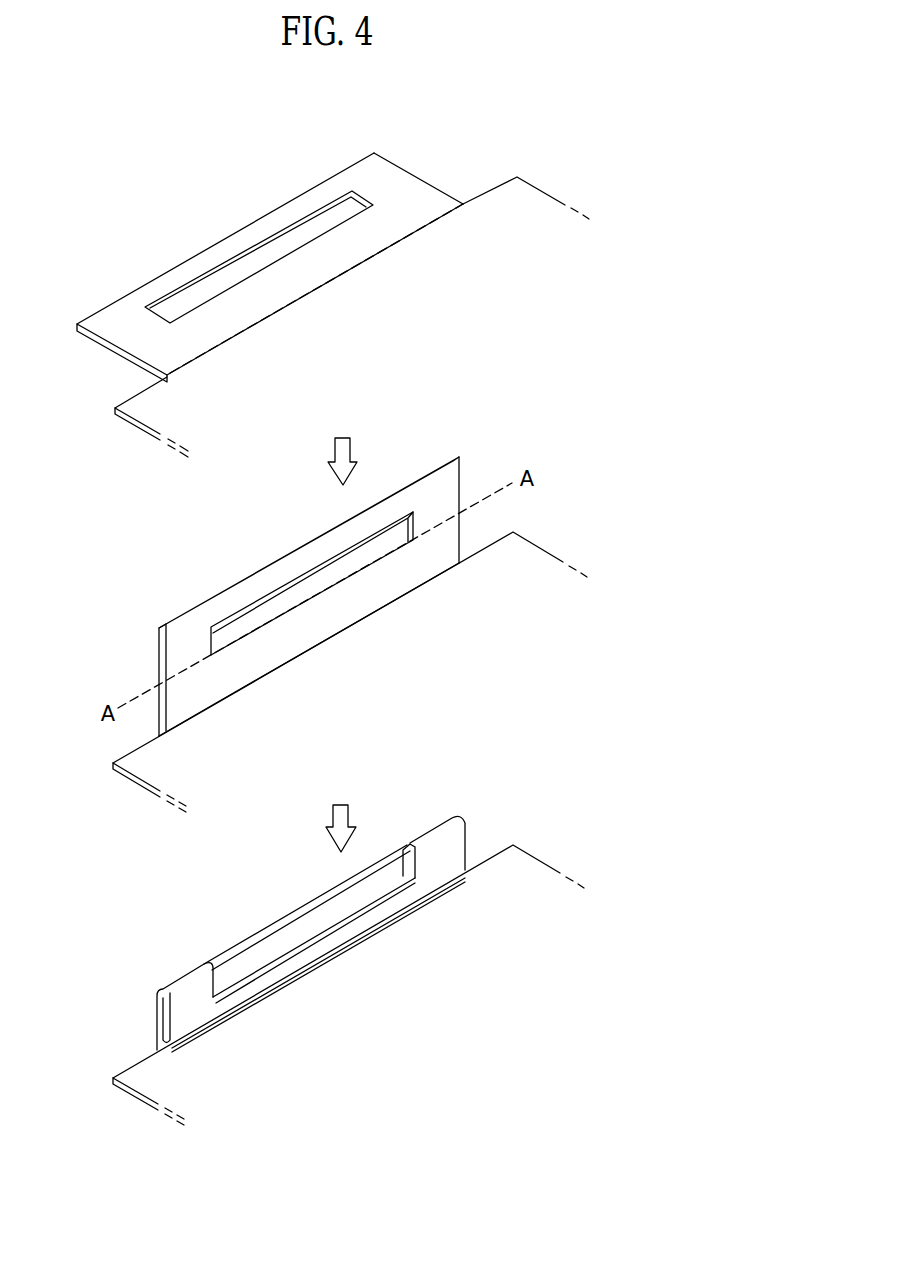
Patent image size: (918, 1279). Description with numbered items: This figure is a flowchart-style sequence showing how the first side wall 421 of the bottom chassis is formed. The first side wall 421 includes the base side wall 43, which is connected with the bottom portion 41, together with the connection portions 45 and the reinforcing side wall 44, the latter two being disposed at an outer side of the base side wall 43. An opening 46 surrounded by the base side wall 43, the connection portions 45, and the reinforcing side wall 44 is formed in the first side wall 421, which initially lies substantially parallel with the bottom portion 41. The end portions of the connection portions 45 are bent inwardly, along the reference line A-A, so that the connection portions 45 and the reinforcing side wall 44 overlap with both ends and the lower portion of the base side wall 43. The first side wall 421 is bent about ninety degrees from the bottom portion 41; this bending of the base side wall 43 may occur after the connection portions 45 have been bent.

The bottom portion 41 is at (532, 202).
The first side wall 421 is at (168, 248).
The base side wall 43 is at (343, 257).
The reinforcing side wall 44 is at (255, 233).
The connection portions 45 is at (379, 189).
The opening 46 is at (238, 282).